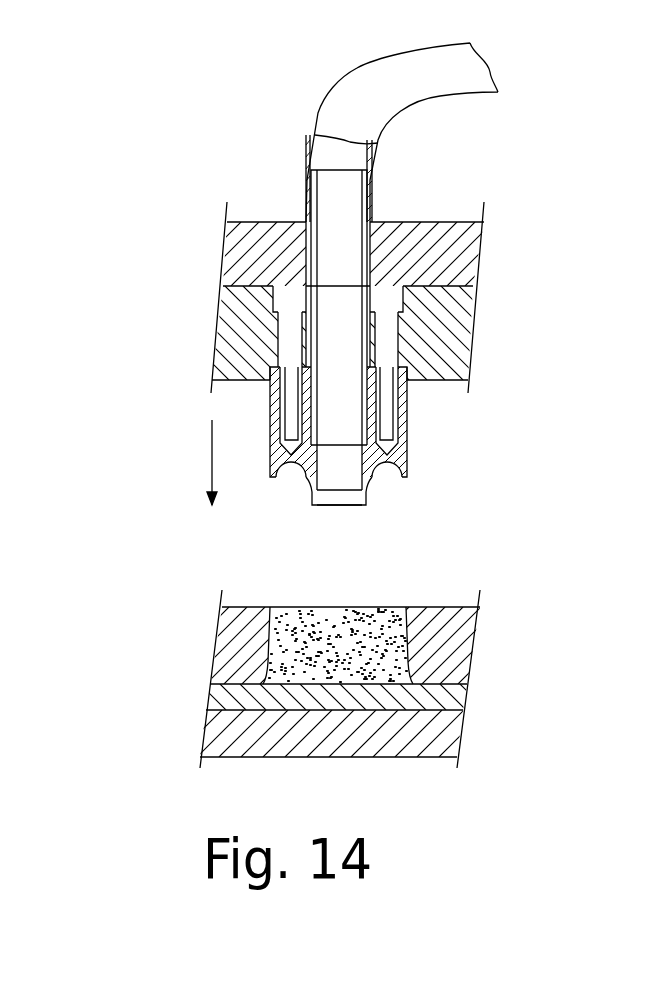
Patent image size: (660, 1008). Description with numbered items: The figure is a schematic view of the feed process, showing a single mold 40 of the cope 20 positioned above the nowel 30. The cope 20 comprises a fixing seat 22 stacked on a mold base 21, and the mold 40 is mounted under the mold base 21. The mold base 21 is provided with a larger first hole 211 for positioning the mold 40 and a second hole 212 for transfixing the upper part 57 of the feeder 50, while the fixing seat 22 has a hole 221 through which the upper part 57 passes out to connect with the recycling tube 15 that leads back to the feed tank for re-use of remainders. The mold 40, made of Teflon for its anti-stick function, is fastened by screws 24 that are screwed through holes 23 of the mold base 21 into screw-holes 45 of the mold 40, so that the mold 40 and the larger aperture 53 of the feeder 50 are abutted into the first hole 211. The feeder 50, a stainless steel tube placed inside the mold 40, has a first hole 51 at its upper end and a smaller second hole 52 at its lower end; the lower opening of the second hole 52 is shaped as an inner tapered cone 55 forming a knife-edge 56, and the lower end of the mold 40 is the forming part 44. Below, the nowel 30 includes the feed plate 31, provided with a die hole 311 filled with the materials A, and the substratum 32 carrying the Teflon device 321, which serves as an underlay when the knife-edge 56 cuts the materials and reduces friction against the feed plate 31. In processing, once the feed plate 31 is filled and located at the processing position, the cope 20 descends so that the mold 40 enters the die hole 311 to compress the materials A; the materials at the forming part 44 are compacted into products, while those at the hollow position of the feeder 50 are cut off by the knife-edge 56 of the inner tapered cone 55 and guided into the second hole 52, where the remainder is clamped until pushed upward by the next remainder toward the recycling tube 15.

The recycling tube 15 is at (357, 117).
The cope 20 is at (277, 208).
The mold base 21 is at (455, 330).
The first hole 211 is at (270, 393).
The second hole 212 is at (368, 352).
The fixing seat 22 is at (468, 250).
The hole 221 is at (288, 248).
The hole 23 is at (272, 318).
The screw 24 is at (290, 352).
The nowel 30 is at (212, 778).
The feed plate 31 is at (455, 652).
The die hole 311 is at (278, 604).
The substratum 32 is at (445, 738).
The Teflon device 321 is at (453, 700).
The mold 40 is at (400, 460).
The forming part 44 is at (390, 470).
The screw-hole 45 is at (273, 430).
The feeder 50 is at (370, 192).
The first hole 51 is at (333, 202).
The second hole 52 is at (347, 477).
The larger aperture 53 is at (380, 424).
The inner tapered cone 55 is at (323, 503).
The knife-edge 56 is at (342, 512).
The upper part 57 is at (415, 226).
The materials A is at (370, 615).